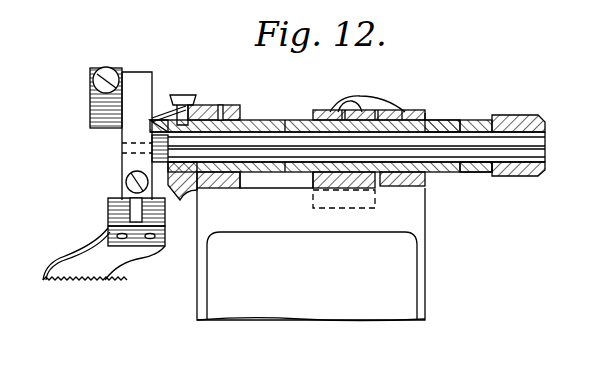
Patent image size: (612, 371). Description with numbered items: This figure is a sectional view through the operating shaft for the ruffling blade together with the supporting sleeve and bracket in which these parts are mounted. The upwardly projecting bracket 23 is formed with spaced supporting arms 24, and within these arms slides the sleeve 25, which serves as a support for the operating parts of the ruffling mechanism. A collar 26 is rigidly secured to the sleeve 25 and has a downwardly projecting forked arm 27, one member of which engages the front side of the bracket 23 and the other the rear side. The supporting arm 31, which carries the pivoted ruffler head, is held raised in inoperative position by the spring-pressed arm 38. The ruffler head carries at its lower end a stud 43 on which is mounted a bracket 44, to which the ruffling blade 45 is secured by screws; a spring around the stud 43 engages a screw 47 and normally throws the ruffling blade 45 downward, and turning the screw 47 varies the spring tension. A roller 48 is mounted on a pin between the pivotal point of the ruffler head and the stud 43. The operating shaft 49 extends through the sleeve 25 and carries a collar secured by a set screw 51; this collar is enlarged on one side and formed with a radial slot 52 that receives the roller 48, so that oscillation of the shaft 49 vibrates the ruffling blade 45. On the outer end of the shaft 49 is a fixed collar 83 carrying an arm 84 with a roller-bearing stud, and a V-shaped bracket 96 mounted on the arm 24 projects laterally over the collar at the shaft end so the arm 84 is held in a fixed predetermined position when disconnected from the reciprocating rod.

The bracket 23 is at (311, 254).
The supporting arms 24 is at (427, 114).
The sleeve 25 is at (258, 120).
The collar 26 is at (324, 110).
The forked arm 27 is at (337, 190).
The supporting arm 31 is at (90, 117).
The arm 38 is at (385, 110).
The stud 43 is at (108, 214).
The bracket 44 is at (140, 240).
The ruffling blade 45 is at (72, 263).
The screw 47 is at (126, 182).
The roller 48 is at (128, 160).
The operating shaft 49 is at (272, 172).
The set screw 51 is at (186, 95).
The radial slot 52 is at (172, 180).
The fixed collar 83 is at (457, 174).
The arm 84 is at (519, 115).
The V-shaped bracket 96 is at (205, 110).